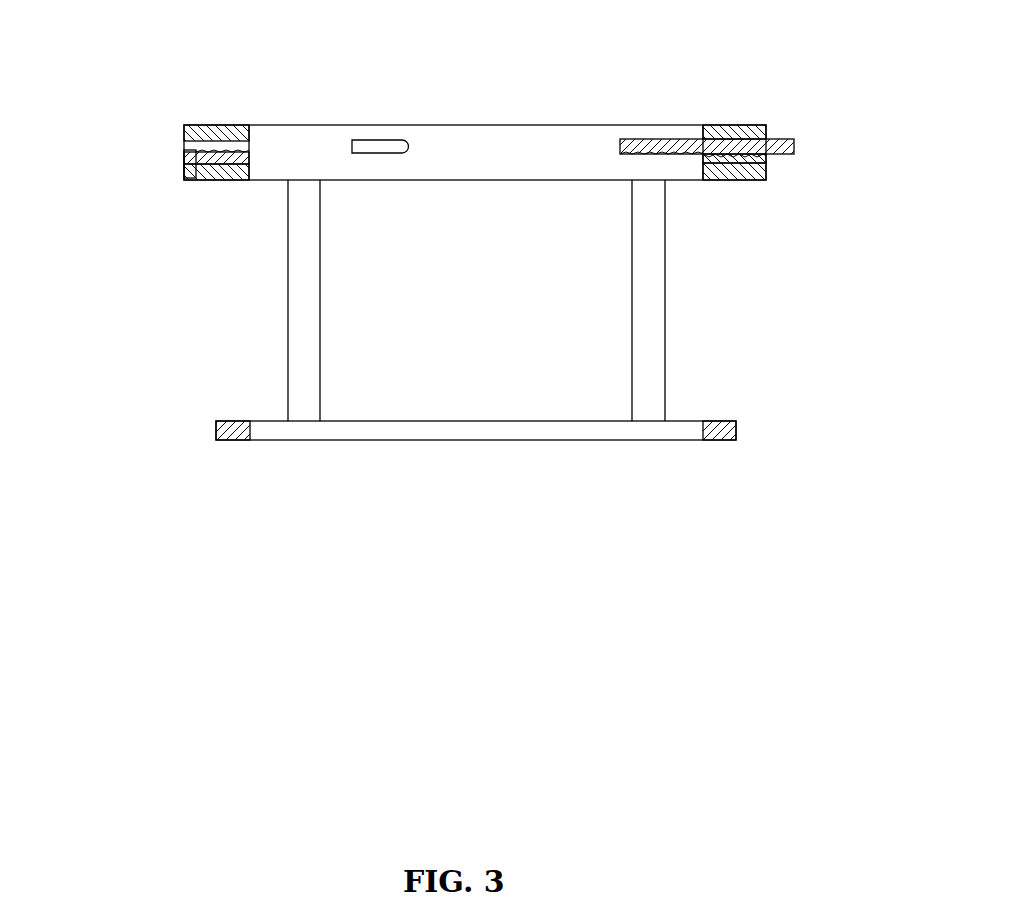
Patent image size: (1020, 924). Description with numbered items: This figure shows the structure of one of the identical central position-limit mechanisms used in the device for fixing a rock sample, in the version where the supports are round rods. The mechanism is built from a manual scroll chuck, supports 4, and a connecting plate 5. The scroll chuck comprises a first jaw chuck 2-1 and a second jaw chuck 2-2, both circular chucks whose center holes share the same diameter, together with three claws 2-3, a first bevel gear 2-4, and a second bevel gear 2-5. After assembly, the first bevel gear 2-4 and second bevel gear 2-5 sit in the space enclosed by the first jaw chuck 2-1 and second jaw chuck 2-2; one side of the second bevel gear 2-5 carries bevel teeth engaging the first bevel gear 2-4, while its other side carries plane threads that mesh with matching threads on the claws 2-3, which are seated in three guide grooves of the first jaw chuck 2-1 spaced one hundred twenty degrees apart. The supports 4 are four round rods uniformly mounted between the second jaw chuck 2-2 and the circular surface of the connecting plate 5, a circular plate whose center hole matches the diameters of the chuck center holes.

The first jaw chuck 2-1 is at (716, 130).
The second jaw chuck 2-2 is at (730, 181).
The claw 2-3 is at (386, 135).
The first bevel gear 2-4 is at (189, 170).
The second bevel gear 2-5 is at (186, 151).
The support 4 is at (304, 232).
The connecting plate 5 is at (214, 423).